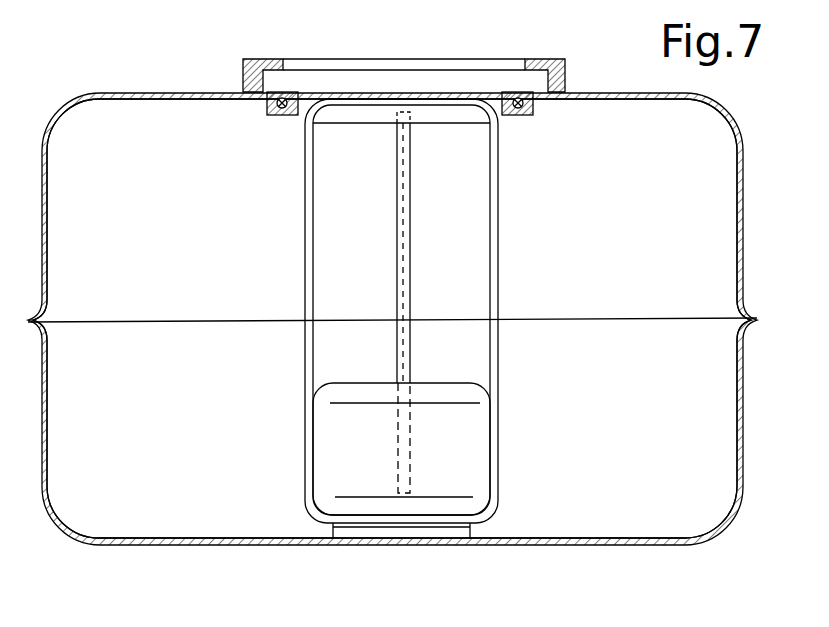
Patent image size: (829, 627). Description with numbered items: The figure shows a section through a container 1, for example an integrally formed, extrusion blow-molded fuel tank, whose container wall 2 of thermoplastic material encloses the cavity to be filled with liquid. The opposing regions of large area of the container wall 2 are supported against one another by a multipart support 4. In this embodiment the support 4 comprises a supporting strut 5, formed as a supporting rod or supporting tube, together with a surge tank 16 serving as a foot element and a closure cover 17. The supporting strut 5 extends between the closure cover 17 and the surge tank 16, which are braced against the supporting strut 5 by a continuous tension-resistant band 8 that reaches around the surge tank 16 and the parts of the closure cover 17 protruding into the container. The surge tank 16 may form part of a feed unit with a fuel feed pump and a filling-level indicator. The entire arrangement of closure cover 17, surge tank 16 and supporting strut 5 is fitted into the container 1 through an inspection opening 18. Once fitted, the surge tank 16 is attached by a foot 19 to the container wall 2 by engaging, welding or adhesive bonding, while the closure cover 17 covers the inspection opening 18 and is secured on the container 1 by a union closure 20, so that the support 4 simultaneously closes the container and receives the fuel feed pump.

The container 1 is at (737, 181).
The container wall 2 is at (165, 93).
The support 4 is at (505, 300).
The supporting strut 5 is at (400, 282).
The tension-resistant band 8 is at (307, 362).
The surge tank 16 is at (470, 450).
The closure cover 17 is at (418, 112).
The inspection opening 18 is at (277, 50).
The foot 19 is at (387, 527).
The union closure 20 is at (567, 72).